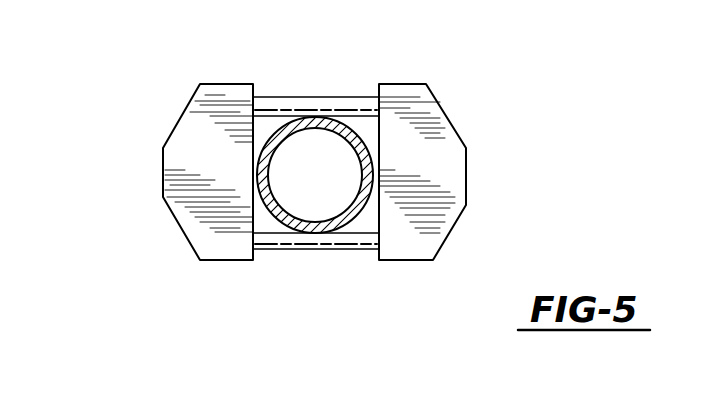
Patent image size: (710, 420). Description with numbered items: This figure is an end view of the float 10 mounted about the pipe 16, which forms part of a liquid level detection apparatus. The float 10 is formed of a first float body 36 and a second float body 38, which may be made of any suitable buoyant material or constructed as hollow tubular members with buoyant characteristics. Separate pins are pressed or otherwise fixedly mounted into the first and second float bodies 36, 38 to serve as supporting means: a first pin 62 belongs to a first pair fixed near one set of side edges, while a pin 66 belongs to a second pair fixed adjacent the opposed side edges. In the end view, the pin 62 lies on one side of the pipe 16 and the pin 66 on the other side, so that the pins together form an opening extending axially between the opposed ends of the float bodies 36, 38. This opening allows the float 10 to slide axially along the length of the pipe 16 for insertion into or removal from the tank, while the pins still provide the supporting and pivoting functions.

The float 10 is at (160, 115).
The pipe 16 is at (275, 215).
The first float body 36 is at (417, 153).
The second float body 38 is at (198, 215).
The first pin 62 is at (278, 102).
The pin 66 is at (357, 240).